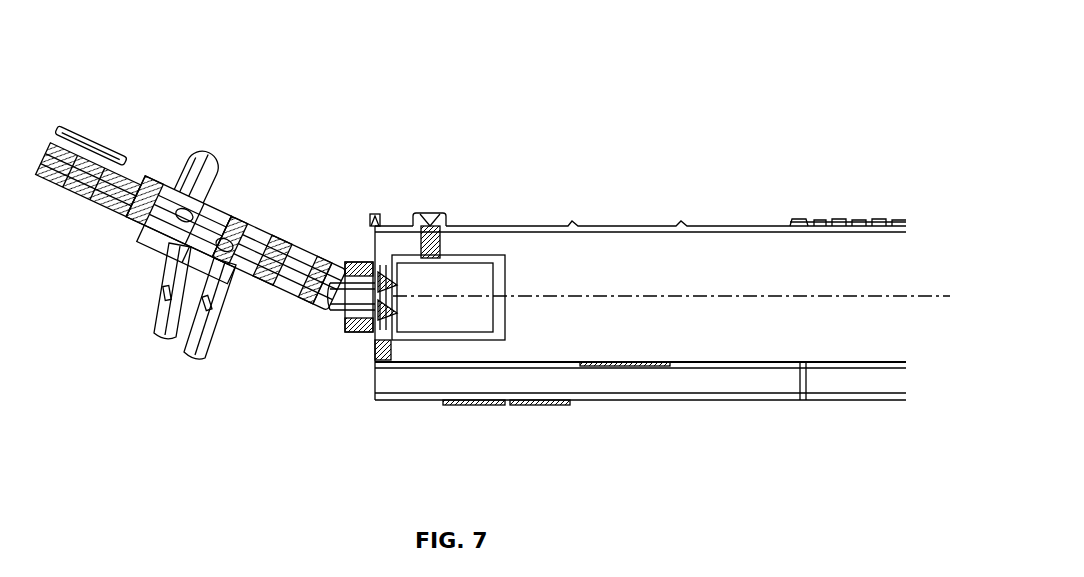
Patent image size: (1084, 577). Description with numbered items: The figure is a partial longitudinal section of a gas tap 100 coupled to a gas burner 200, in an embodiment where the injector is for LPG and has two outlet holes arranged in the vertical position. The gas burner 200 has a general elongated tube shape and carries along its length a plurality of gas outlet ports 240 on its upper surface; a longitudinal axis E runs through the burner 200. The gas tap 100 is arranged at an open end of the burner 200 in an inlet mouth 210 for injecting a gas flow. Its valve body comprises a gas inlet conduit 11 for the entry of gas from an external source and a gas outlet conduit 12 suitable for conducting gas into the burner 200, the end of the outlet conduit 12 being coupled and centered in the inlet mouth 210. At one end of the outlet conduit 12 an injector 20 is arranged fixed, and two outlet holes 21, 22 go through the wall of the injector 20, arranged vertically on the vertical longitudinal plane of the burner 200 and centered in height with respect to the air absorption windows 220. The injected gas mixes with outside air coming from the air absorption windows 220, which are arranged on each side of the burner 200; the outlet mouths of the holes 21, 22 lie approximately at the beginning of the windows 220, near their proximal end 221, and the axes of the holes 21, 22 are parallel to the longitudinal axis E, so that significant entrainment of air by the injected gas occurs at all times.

The gas tap 100 is at (267, 178).
The gas inlet conduit 11 is at (155, 332).
The gas outlet conduit 12 is at (296, 253).
The injector 20 is at (372, 325).
The outlet hole 21 is at (398, 290).
The outlet hole 22 is at (397, 300).
The proximal end 221 is at (388, 322).
The gas burner 200 is at (670, 190).
The inlet mouth 210 is at (381, 224).
The air absorption windows 220 is at (470, 280).
The gas outlet ports 240 is at (800, 222).
The longitudinal axis E is at (628, 296).